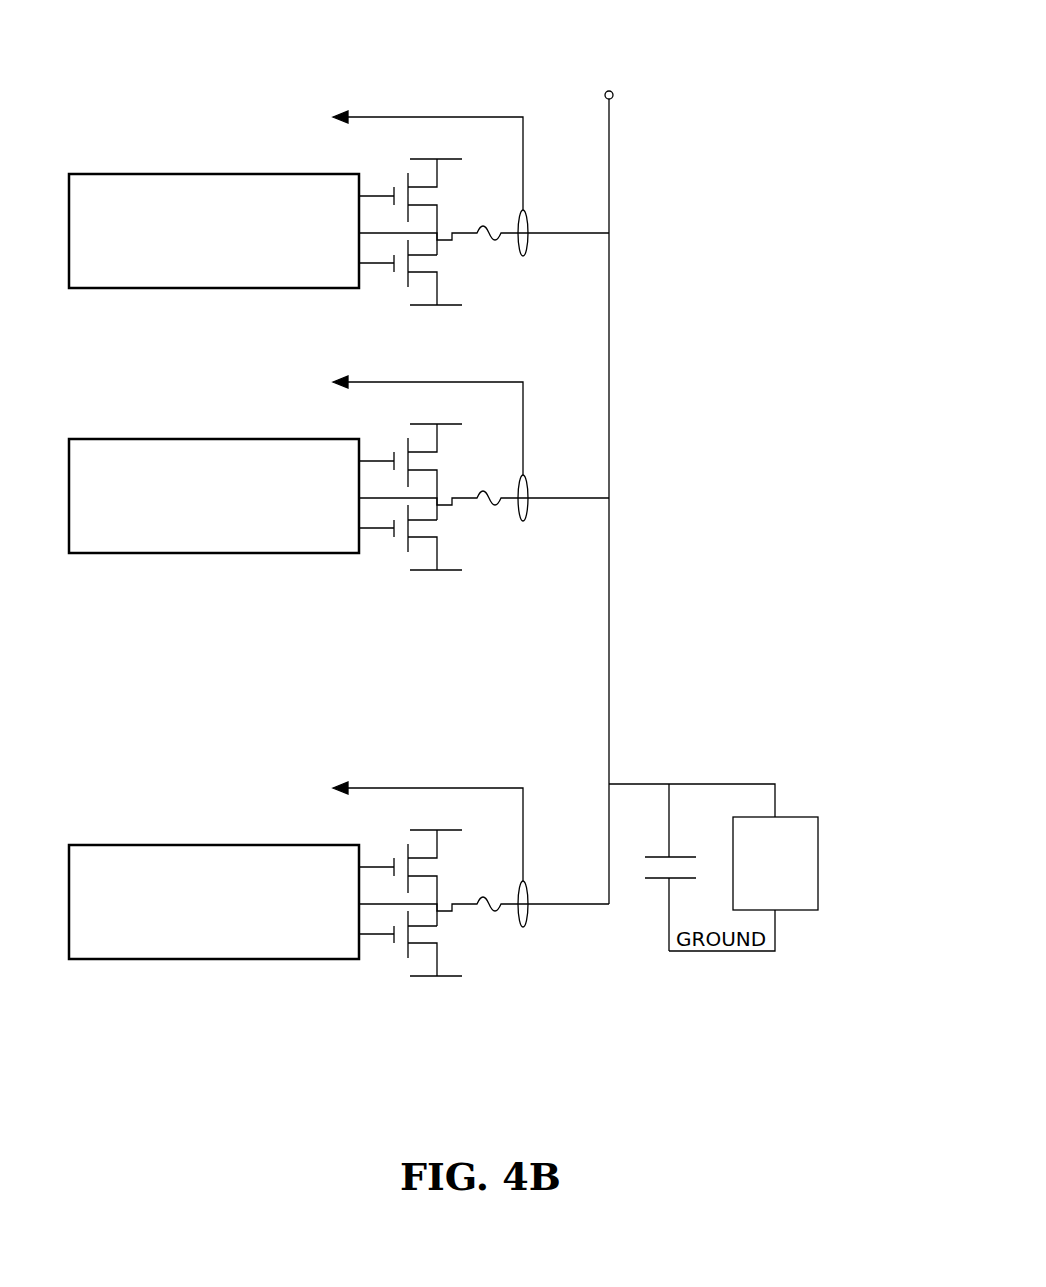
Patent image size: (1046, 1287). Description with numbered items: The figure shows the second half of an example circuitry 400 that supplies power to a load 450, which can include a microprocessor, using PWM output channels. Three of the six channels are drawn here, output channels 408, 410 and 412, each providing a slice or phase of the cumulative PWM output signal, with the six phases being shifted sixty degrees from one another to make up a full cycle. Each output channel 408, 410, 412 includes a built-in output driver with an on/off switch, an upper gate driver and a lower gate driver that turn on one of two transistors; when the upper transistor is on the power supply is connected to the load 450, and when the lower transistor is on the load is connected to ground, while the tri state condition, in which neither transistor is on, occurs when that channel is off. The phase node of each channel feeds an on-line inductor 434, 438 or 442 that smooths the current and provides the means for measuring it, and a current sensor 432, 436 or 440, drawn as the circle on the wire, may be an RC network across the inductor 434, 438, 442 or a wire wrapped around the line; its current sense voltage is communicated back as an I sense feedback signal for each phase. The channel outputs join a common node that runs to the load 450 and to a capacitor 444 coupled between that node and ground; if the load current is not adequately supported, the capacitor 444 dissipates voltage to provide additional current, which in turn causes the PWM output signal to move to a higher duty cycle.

The circuitry 400 is at (754, 50).
The output channel 408 is at (215, 174).
The output channel 410 is at (215, 439).
The output channel 412 is at (215, 845).
The current sensor 432 is at (545, 203).
The inductor 434 is at (492, 265).
The current sensor 436 is at (545, 468).
The inductor 438 is at (492, 530).
The current sensor 440 is at (545, 874).
The inductor 442 is at (492, 936).
The capacitor 444 is at (676, 855).
The load 450 is at (788, 817).